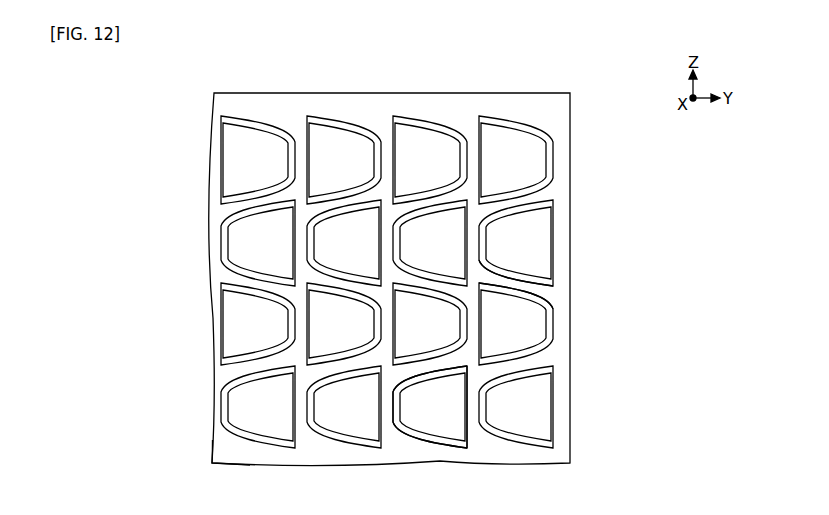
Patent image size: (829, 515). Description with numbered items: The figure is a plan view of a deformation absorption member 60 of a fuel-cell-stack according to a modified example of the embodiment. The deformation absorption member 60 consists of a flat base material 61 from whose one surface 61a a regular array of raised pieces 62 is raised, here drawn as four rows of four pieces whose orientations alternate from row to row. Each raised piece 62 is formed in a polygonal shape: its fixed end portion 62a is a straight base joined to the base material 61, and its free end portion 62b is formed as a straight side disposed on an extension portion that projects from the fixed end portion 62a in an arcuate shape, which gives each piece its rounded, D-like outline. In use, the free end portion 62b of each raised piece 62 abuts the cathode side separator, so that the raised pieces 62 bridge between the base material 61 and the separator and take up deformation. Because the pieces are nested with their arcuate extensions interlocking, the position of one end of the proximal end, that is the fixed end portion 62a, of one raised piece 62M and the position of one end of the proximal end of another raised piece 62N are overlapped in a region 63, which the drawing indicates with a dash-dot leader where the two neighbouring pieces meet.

The deformation absorption member 60 is at (117, 66).
The base material 61 is at (212, 337).
The one surface 61a is at (227, 445).
The raised piece 62 is at (440, 428).
The fixed end portion 62a is at (468, 410).
The free end portion 62b is at (397, 412).
The one raised piece 62M is at (532, 318).
The another raised piece 62N is at (542, 230).
The region 63 is at (550, 294).